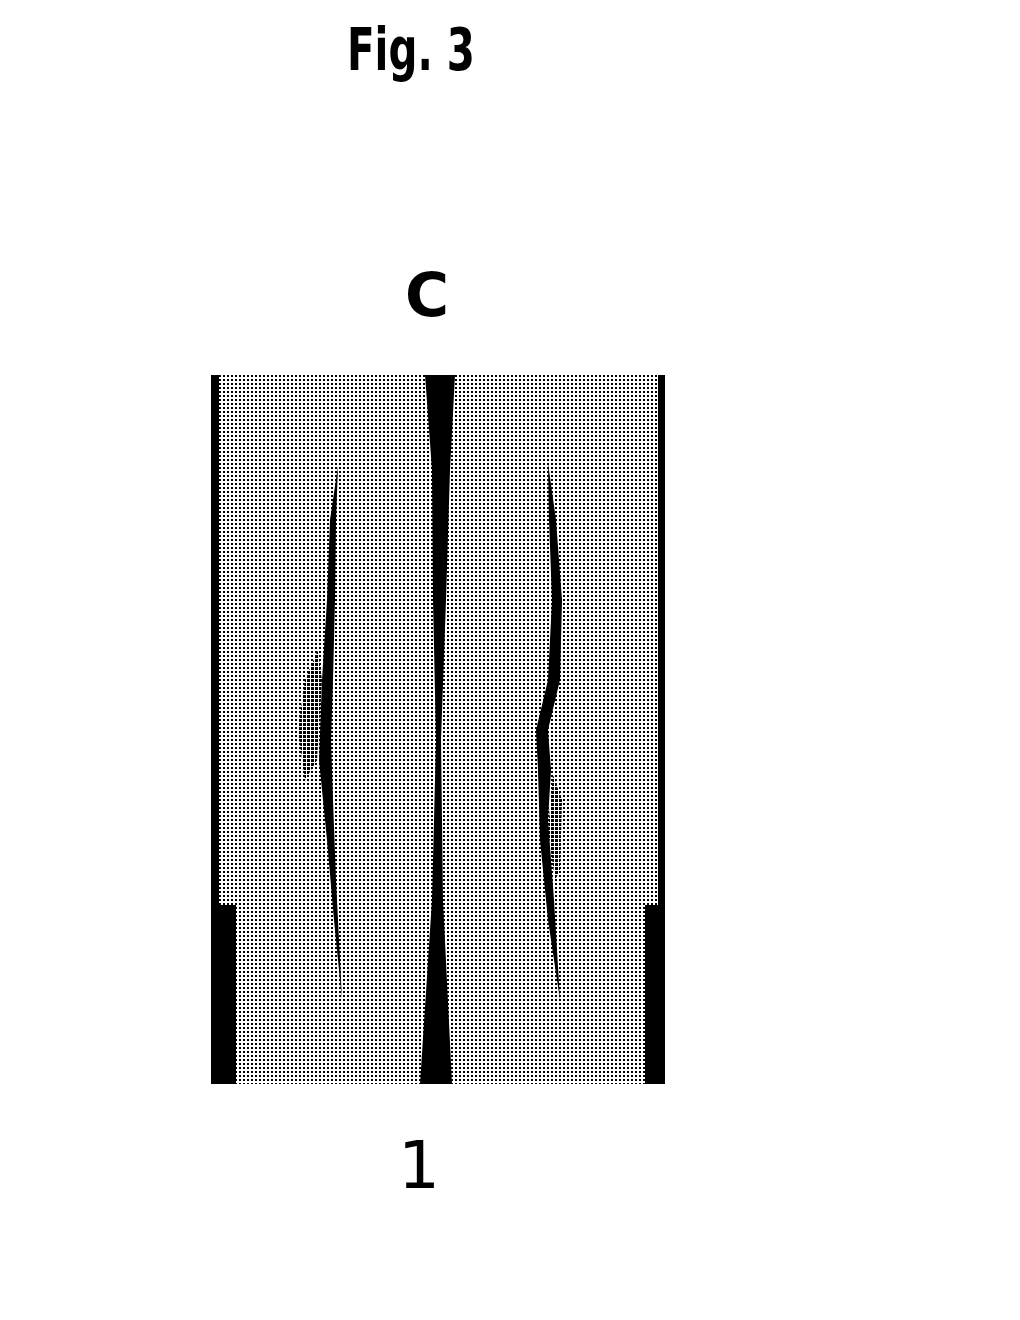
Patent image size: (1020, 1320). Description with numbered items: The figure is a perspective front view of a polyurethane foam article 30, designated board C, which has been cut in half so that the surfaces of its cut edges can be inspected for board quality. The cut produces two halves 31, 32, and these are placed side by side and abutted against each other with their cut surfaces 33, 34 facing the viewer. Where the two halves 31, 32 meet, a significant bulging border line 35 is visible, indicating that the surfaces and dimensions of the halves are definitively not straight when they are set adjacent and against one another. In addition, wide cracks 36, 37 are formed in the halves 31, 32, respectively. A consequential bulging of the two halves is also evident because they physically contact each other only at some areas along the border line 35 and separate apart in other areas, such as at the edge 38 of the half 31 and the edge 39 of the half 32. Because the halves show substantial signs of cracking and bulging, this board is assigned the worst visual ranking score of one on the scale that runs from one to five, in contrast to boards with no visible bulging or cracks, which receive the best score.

The PUR foam article 30 is at (452, 212).
The first half 31 is at (333, 403).
The second half 32 is at (620, 400).
The cut surface 33 is at (266, 950).
The cut surface 34 is at (630, 657).
The bulging border line 35 is at (435, 425).
The wide crack 36 is at (313, 786).
The wide crack 37 is at (548, 818).
The edge 38 is at (396, 1012).
The edge 39 is at (432, 372).